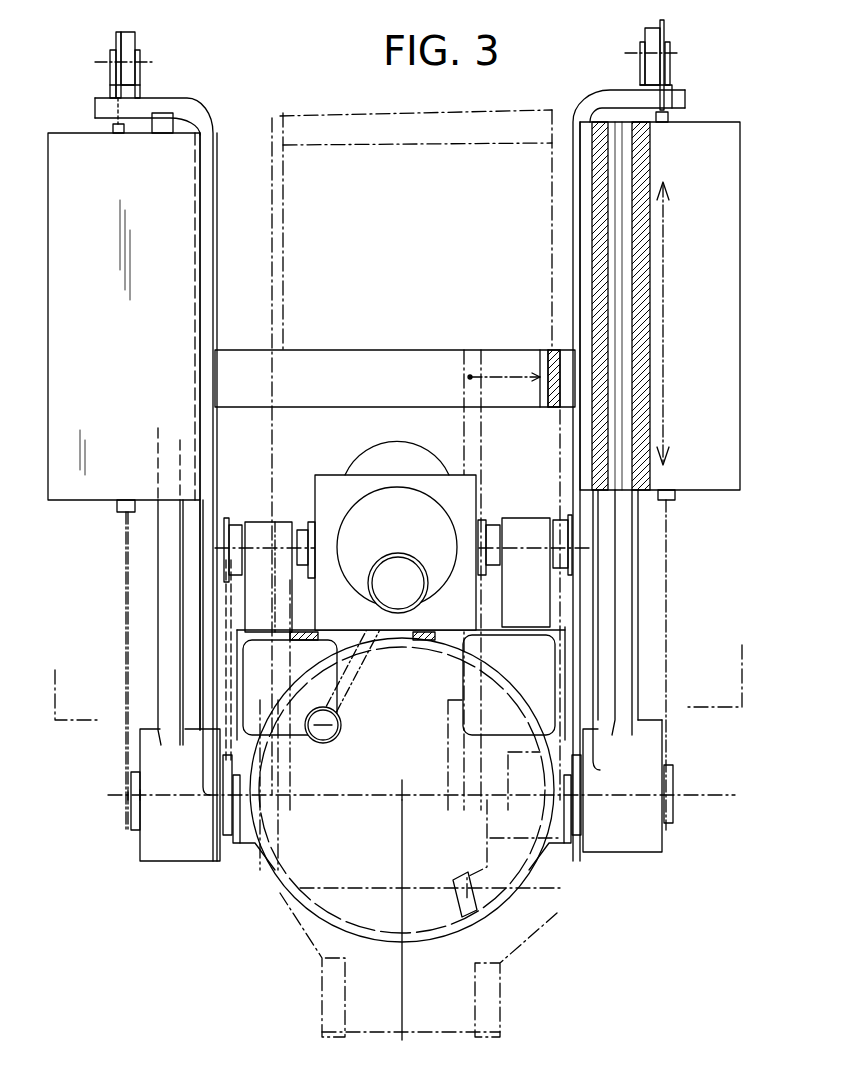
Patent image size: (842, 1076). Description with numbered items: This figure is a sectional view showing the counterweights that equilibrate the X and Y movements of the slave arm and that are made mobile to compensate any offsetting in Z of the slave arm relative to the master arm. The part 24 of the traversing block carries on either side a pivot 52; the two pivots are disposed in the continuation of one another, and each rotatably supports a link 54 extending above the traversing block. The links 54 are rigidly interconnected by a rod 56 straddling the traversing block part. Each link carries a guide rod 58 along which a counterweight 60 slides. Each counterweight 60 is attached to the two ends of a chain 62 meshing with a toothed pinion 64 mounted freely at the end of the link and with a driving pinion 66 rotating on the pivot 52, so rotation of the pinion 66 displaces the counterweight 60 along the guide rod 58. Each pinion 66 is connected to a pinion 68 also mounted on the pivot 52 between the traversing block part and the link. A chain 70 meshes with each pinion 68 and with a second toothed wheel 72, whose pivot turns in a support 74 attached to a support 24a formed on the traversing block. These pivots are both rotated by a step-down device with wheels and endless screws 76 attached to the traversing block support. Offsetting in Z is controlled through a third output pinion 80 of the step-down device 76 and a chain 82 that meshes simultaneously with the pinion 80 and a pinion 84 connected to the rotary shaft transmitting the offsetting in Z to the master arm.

The part of the traversing block 24 is at (262, 845).
The support 24a is at (522, 644).
The pivot 52 is at (248, 843).
The link 54 is at (208, 572).
The rod 56 is at (348, 360).
The guide rod 58 is at (175, 604).
The counterweight 60 is at (138, 405).
The chain 62 is at (128, 705).
The toothed pinion 64 is at (128, 40).
The driving pinion 66 is at (130, 812).
The pinion 68 is at (220, 813).
The chain 70 is at (227, 648).
The second toothed wheel 72 is at (228, 518).
The support 74 is at (280, 520).
The step-down device with wheels and endless screws 76 is at (358, 482).
The third output pinion 80 is at (392, 565).
The chain 82 is at (378, 663).
The pinion 84 is at (332, 738).